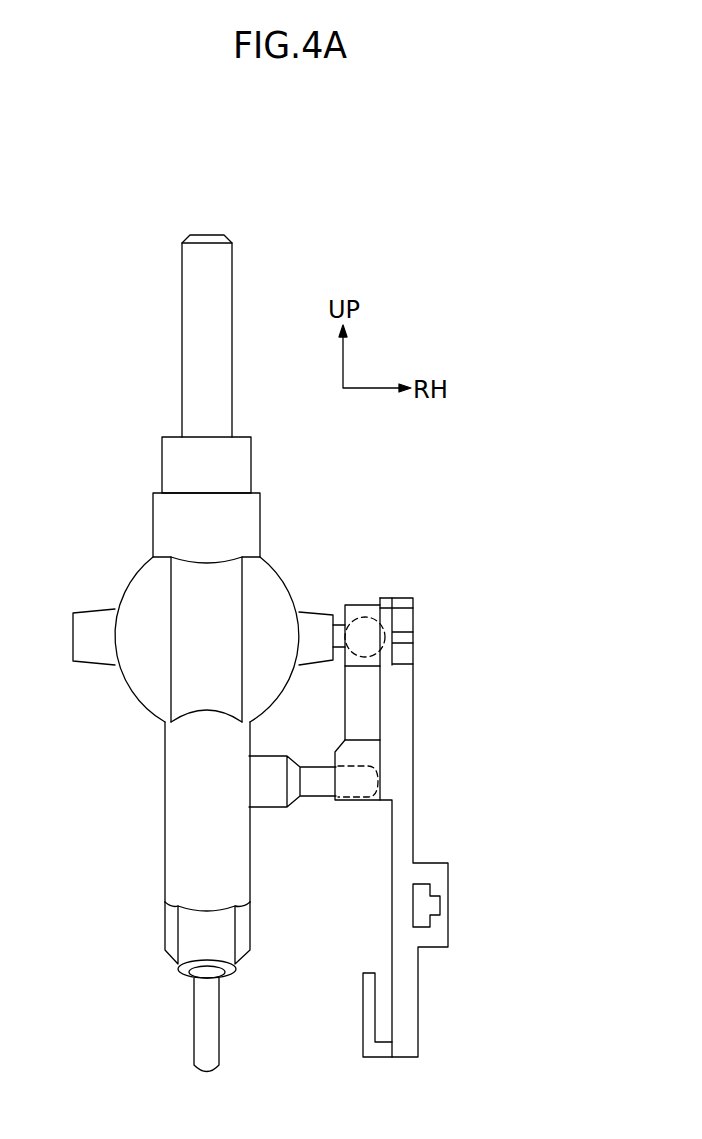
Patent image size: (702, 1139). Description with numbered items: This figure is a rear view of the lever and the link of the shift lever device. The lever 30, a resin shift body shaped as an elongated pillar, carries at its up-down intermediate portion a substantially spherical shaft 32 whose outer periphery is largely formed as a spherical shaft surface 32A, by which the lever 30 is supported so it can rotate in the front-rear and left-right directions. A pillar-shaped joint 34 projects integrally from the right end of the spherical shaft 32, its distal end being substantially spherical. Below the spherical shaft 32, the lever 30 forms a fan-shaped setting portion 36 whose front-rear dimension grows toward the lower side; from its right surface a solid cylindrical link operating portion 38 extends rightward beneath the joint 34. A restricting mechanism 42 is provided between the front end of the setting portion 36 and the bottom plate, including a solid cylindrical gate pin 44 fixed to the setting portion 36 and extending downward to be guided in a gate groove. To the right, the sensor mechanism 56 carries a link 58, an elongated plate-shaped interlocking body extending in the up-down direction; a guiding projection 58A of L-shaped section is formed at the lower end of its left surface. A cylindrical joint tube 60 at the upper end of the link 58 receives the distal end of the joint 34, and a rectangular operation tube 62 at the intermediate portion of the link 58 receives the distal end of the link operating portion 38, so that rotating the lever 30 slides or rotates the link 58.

The lever 30 is at (182, 318).
The spherical shaft 32 is at (193, 590).
The shaft surface 32A is at (269, 587).
The joint 34 is at (312, 612).
The setting portion 36 is at (165, 812).
The link operating portion 38 is at (318, 808).
The restricting mechanism 42 is at (154, 987).
The gate pin 44 is at (194, 1023).
The sensor mechanism 56 is at (450, 827).
The link 58 is at (414, 700).
The guiding projection 58A is at (362, 1012).
The joint tube 60 is at (362, 605).
The operation tube 62 is at (335, 762).